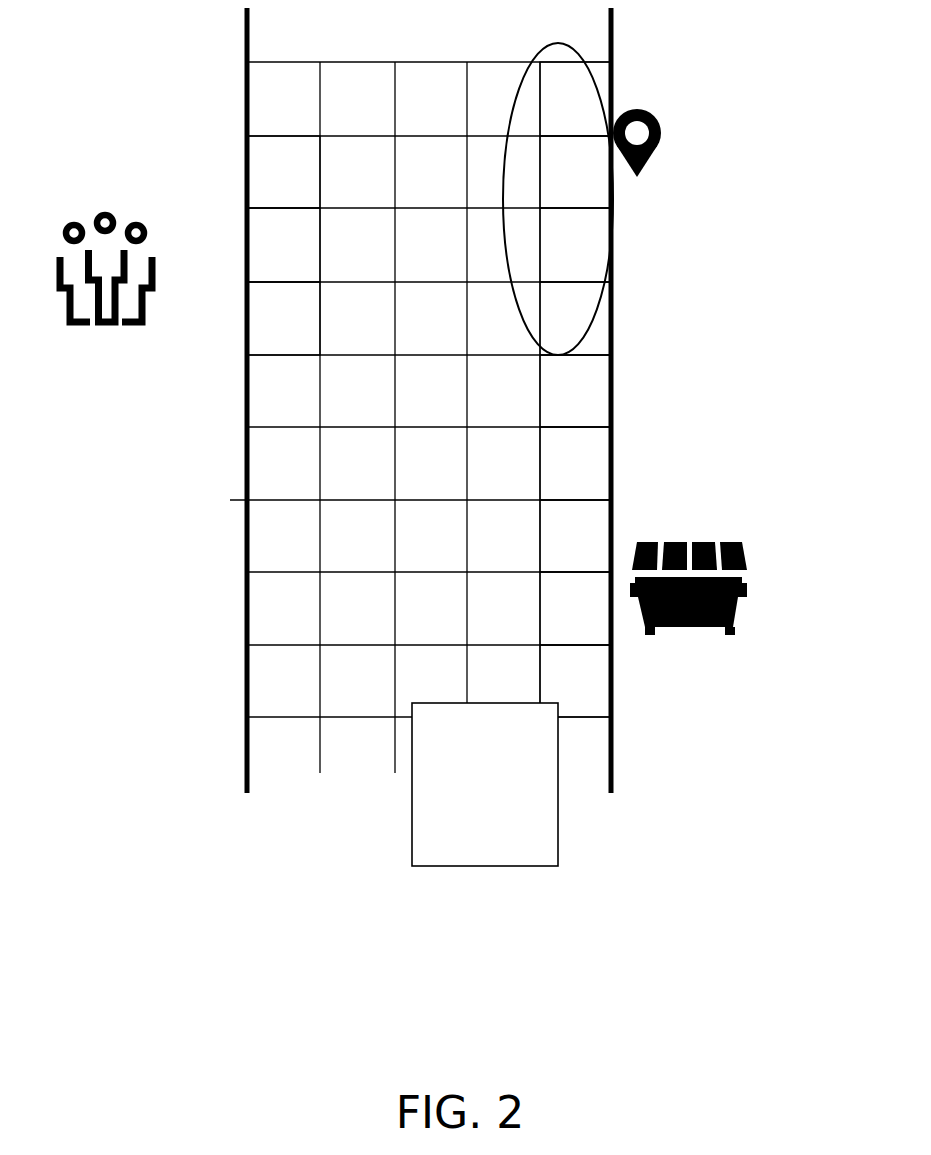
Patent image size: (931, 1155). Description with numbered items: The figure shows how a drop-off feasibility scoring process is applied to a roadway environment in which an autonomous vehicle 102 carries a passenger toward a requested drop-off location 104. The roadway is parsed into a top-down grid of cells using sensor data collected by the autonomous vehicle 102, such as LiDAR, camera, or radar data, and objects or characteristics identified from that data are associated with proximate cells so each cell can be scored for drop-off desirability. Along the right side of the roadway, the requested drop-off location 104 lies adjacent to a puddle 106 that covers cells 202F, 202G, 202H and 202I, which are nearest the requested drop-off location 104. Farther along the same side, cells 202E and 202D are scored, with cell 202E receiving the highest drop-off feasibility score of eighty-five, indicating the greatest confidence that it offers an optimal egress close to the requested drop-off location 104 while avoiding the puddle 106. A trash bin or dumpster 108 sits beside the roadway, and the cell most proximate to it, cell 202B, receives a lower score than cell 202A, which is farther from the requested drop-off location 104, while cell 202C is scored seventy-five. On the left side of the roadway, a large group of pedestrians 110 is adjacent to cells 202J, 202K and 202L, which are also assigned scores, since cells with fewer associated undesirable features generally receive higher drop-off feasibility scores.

The autonomous vehicle 102 is at (411, 830).
The requested drop-off location 104 is at (658, 150).
The puddle 106 is at (615, 203).
The trash bin (dumpster) 108 is at (750, 563).
The group of pedestrians 110 is at (120, 320).
The cell 202A is at (615, 692).
The cell 202B is at (538, 599).
The cell 202C is at (538, 533).
The cell 202D is at (615, 475).
The cell 202E is at (615, 405).
The cell 202F is at (538, 313).
The cell 202G is at (538, 232).
The cell 202H is at (538, 155).
The cell 202I is at (538, 97).
The cell 202J is at (247, 168).
The cell 202K is at (247, 240).
The cell 202L is at (247, 310).